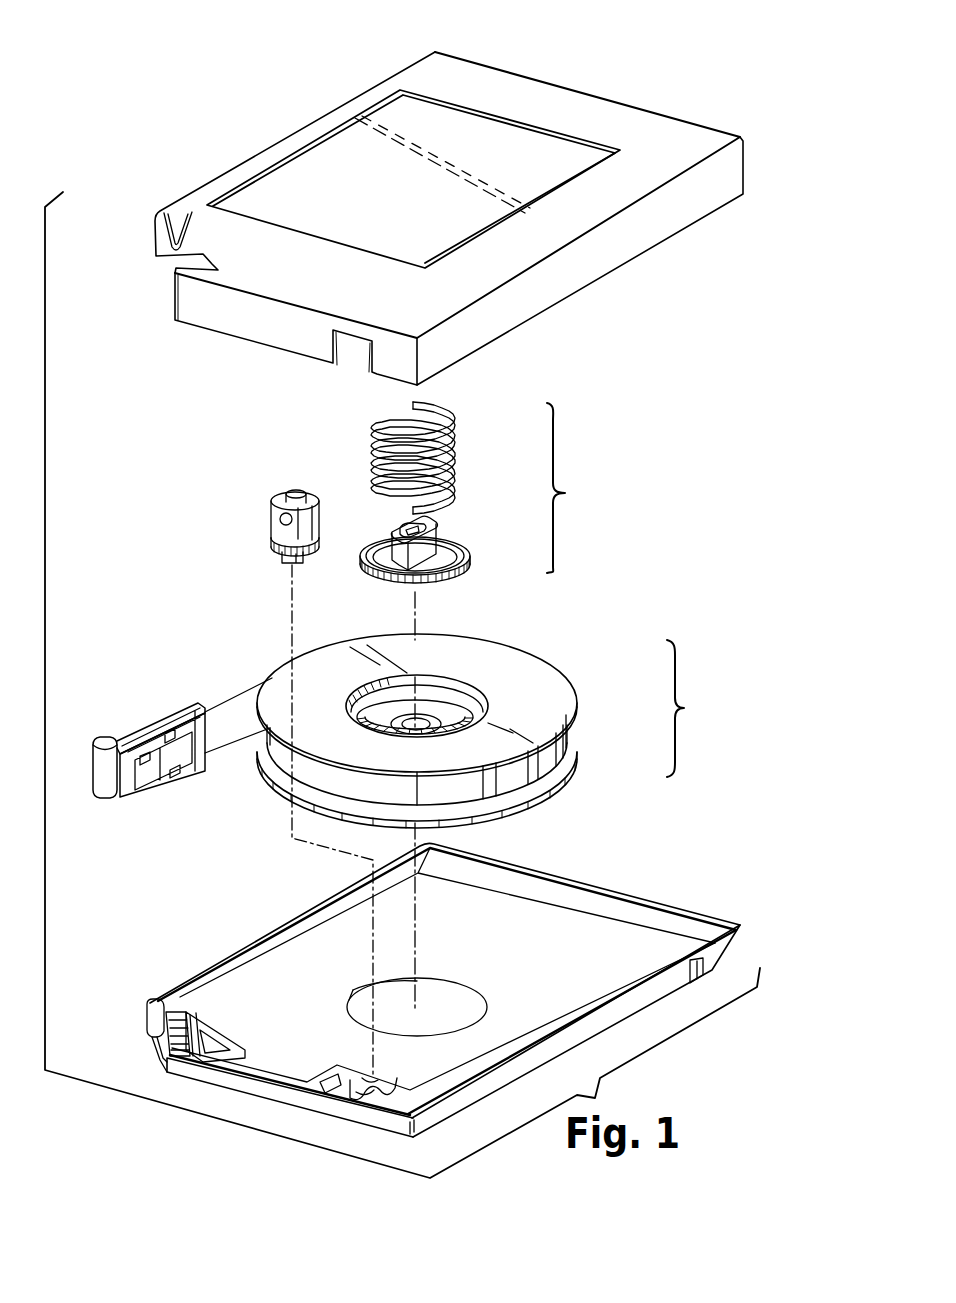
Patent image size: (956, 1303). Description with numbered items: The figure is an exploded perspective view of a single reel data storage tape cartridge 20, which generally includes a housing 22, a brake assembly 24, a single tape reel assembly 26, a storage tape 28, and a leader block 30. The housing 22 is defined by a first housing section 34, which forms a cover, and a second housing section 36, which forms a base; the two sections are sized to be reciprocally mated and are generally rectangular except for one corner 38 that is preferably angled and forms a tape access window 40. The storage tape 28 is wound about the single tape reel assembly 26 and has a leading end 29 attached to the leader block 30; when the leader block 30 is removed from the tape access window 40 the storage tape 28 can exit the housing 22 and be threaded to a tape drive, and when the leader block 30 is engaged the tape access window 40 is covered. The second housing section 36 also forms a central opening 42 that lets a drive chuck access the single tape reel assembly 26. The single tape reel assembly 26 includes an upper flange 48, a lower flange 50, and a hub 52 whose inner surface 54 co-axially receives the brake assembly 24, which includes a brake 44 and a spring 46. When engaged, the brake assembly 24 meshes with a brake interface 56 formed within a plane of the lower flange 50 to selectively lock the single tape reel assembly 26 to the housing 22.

The single reel data storage tape cartridge 20 is at (708, 70).
The housing 22 is at (708, 111).
The brake assembly 24 is at (572, 488).
The single tape reel assembly 26 is at (486, 714).
The storage tape 28 is at (230, 706).
The leading end 29 is at (217, 728).
The leader block 30 is at (120, 720).
The first housing section 34 is at (547, 76).
The second housing section 36 is at (667, 896).
The corner 38 is at (160, 243).
The tape access window 40 is at (146, 1030).
The central opening 42 is at (455, 984).
The brake 44 is at (472, 562).
The spring 46 is at (452, 453).
The upper flange 48 is at (553, 693).
The lower flange 50 is at (566, 755).
The hub 52 is at (456, 686).
The inner surface 54 is at (460, 694).
The brake interface 56 is at (379, 700).